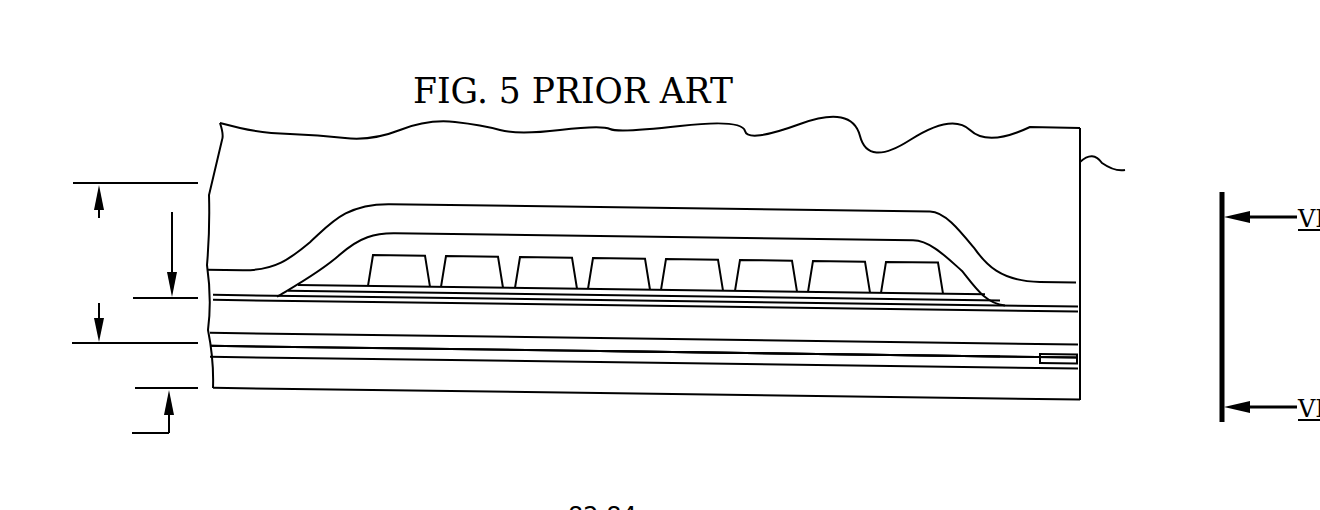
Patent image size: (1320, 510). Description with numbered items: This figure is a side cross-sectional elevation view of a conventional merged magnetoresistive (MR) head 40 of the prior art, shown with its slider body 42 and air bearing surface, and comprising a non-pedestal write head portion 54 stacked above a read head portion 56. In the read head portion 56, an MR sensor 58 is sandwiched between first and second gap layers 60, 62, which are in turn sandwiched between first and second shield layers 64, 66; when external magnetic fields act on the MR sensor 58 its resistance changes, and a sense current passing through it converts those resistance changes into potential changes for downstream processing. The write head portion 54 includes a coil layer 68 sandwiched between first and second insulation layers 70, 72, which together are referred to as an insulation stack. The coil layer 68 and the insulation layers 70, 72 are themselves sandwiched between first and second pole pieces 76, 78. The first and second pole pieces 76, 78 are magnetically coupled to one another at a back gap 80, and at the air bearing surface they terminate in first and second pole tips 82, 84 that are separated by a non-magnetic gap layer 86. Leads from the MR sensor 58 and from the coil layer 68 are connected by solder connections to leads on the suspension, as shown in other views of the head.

The merged magnetoresistive (MR) head 40 is at (190, 97).
The overcoat layer 42 is at (295, 153).
The write head portion 54 is at (130, 263).
The read head portion 56 is at (130, 440).
The MR sensor 58 is at (1077, 358).
The first gap layer 60 is at (665, 363).
The second gap layer 62 is at (585, 336).
The first shield layer 64 is at (780, 377).
The second shield layer 66 is at (938, 330).
The first pole piece 76 is at (644, 352).
The coil layer 68 is at (620, 270).
The first insulation layer 70 is at (463, 290).
The second insulation layer 72 is at (963, 270).
The second pole piece 78 is at (783, 227).
The back gap 80 is at (247, 270).
The first pole tip 82 is at (1080, 328).
The second pole tip 84 is at (1067, 298).
The non-magnetic gap layer 86 is at (1075, 309).